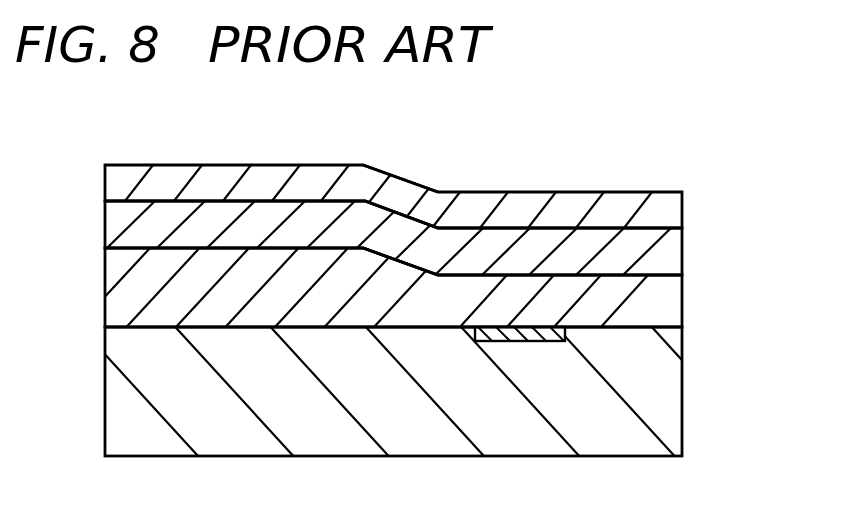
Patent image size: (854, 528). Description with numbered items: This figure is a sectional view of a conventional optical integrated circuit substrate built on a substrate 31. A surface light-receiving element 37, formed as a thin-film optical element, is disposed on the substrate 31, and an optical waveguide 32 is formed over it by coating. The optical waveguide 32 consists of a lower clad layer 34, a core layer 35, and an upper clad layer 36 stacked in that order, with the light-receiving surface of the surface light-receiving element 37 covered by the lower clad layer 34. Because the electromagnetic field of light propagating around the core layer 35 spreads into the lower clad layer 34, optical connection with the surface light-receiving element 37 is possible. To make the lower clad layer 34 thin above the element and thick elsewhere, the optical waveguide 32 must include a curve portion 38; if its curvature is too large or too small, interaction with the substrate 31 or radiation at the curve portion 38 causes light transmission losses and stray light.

The substrate 31 is at (667, 398).
The optical waveguide 32 is at (444, 246).
The lower clad layer 34 is at (660, 297).
The core layer 35 is at (660, 251).
The upper clad layer 36 is at (425, 196).
The surface light-receiving element 37 is at (535, 342).
The curve portion 38 is at (400, 238).